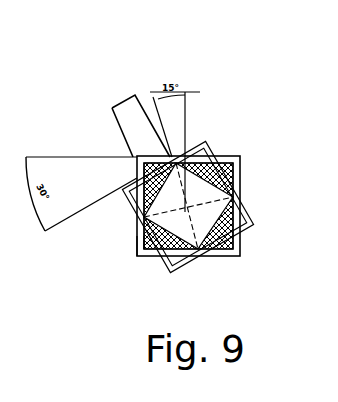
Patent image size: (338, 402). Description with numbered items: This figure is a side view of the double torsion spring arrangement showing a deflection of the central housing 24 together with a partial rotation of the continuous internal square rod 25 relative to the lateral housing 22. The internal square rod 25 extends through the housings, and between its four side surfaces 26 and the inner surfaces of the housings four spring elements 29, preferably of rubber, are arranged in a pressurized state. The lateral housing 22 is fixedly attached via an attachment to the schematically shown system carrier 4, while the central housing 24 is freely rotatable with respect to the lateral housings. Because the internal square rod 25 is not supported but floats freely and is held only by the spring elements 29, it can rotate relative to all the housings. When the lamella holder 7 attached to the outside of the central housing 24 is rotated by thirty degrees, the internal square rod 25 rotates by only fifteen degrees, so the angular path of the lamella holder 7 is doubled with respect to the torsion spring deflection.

The system carrier 4 is at (216, 290).
The lamella holder 7 is at (123, 109).
The left lateral housing 22 is at (136, 247).
The central housing 24 is at (129, 191).
The internal square rod 25 is at (210, 173).
The side surfaces 26 is at (243, 178).
The spring elements 29 is at (134, 156).